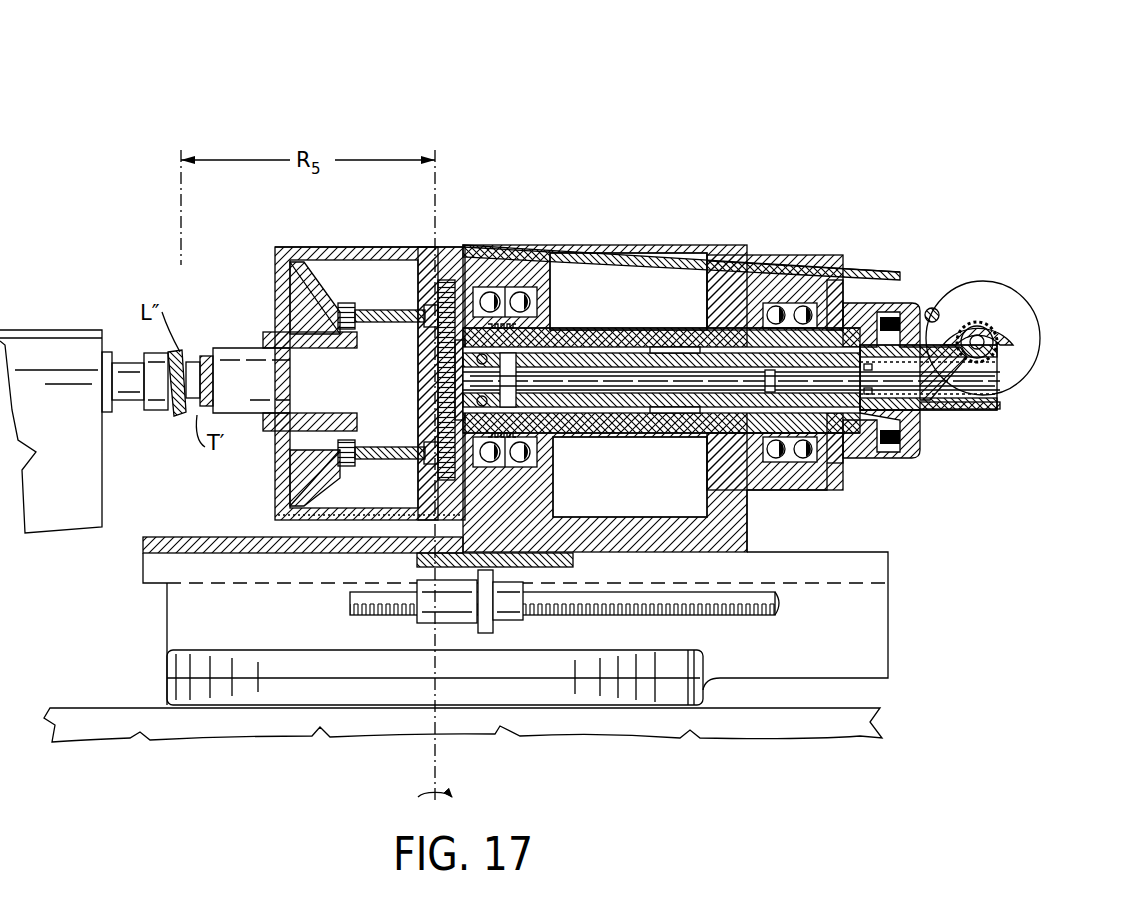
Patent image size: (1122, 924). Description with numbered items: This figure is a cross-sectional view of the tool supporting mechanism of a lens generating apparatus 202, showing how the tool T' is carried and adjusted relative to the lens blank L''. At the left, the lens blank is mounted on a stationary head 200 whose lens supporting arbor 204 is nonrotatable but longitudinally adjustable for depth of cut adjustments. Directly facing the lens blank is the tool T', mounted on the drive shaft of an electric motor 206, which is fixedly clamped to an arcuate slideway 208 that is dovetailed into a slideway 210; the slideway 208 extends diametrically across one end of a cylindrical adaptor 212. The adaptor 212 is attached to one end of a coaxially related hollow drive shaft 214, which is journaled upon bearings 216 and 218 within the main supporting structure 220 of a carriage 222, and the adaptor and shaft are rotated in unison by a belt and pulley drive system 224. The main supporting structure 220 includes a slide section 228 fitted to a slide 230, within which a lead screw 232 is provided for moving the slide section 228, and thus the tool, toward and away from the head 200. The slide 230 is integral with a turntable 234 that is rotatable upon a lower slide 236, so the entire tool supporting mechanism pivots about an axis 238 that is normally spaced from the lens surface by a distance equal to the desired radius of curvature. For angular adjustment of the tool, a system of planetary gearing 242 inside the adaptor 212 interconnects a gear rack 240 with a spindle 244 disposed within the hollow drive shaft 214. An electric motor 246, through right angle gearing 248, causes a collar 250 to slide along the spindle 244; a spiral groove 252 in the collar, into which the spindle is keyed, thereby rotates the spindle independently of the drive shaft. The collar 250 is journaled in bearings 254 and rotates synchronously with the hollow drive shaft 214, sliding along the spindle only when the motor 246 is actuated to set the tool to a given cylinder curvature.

The head 200 is at (57, 330).
The lens generating apparatus 202 is at (118, 262).
The lens supporting arbor 204 is at (130, 409).
The electric motor 206 is at (265, 346).
The arcuate slideway 208 is at (265, 300).
The slideway 210 is at (326, 312).
The cylindrical adaptor 212 is at (300, 249).
The hollow drive shaft 214 is at (633, 345).
The bearing 216 is at (488, 289).
The bearing 218 is at (823, 300).
The main supporting structure 220 is at (572, 252).
The carriage 222 is at (674, 247).
The belt and pulley drive system 224 is at (880, 318).
The slide section 228 is at (218, 537).
The slide 230 is at (850, 552).
The lead screw 232 is at (746, 614).
The turntable 234 is at (166, 685).
The lower slide 236 is at (632, 720).
The axis 238 is at (446, 182).
The gear rack 240 is at (372, 347).
The planetary gearing 242 is at (432, 402).
The spindle 244 is at (680, 398).
The electric motor 246 is at (978, 288).
The right angle gearing 248 is at (1002, 350).
The collar 250 is at (748, 405).
The spiral groove 252 is at (568, 352).
The bearings 254 is at (945, 412).